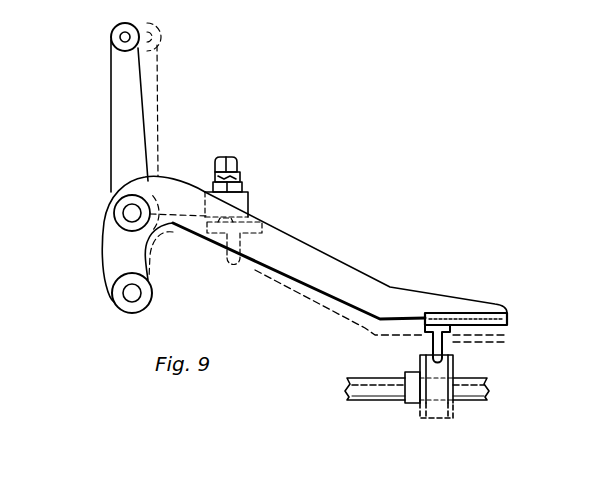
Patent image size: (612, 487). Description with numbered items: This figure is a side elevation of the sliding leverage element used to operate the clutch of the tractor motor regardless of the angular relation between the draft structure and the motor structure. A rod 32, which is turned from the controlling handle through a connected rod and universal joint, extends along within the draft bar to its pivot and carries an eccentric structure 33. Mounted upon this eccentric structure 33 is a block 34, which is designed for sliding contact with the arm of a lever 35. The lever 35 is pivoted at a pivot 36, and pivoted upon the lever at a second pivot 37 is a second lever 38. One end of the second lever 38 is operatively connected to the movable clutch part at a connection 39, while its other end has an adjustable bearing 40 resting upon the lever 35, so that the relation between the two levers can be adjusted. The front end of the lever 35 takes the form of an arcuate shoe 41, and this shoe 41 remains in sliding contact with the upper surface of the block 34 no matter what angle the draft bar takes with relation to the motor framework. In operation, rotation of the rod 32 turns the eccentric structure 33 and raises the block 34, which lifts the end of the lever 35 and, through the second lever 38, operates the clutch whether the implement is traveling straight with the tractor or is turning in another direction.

The rod 32 is at (366, 387).
The eccentric structure 33 is at (440, 388).
The block 34 is at (444, 338).
The lever 35 is at (305, 253).
The pivot 36 is at (130, 293).
The pivot 37 is at (130, 213).
The second lever 38 is at (118, 142).
The connection to movable clutch part 39 is at (117, 38).
The adjustable bearing 40 is at (249, 195).
The arcuate shoe 41 is at (438, 314).